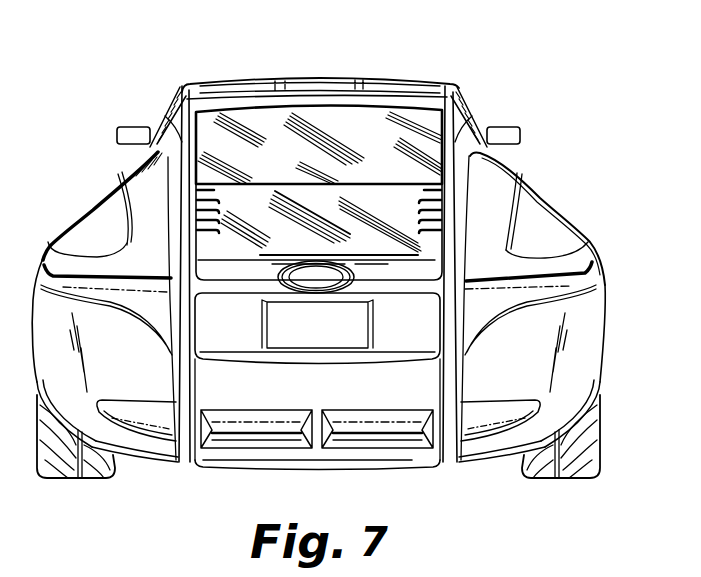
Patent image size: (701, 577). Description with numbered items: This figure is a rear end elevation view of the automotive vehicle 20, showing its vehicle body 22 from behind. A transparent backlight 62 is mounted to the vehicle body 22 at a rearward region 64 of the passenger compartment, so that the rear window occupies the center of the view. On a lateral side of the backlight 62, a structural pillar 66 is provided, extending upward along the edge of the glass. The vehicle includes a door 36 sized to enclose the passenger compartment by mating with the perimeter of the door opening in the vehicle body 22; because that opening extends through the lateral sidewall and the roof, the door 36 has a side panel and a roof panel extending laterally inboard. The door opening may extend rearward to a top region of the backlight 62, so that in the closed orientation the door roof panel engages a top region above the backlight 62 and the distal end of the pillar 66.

The automotive vehicle 20 is at (593, 73).
The vehicle body 22 is at (552, 210).
The door 36 is at (182, 78).
The transparent backlight 62 is at (276, 119).
The rearward region 64 is at (162, 156).
The structural pillar 66 is at (162, 118).